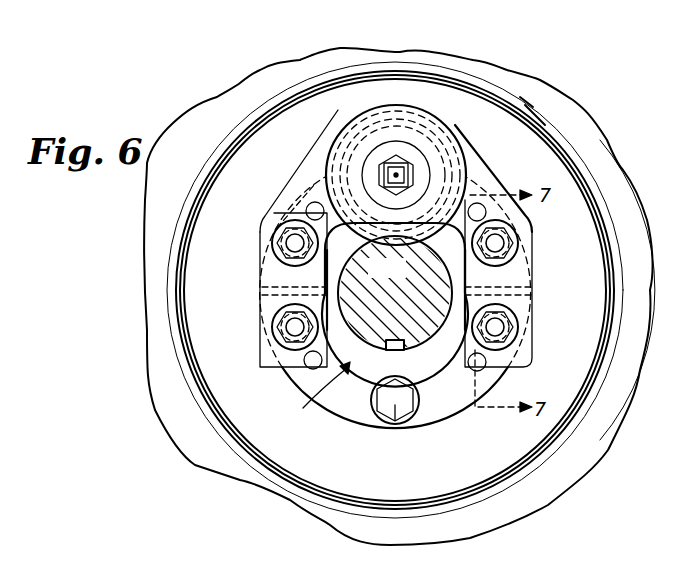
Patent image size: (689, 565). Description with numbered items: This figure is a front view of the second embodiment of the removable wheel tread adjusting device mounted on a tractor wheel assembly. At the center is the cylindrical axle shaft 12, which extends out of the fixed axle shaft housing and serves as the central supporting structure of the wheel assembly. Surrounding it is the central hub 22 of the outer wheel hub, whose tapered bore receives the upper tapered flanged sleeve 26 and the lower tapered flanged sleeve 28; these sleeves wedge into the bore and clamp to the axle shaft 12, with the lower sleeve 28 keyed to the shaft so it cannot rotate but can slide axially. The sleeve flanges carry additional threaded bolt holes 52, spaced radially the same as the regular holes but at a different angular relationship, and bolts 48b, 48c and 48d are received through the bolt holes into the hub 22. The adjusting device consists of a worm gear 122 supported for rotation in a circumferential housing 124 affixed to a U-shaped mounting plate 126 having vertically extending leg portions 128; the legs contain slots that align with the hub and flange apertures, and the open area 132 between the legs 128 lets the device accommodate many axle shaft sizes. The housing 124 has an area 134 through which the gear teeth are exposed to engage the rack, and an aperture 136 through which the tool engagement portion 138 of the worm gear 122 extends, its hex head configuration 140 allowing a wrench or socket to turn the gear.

The axle shaft 12 is at (416, 343).
The central hub 22 is at (592, 202).
The upper tapered flanged sleeve 26 is at (295, 208).
The lower tapered flanged sleeve 28 is at (438, 423).
The bolt 48b is at (290, 240).
The bolt 48c is at (290, 327).
The bolt 48d is at (394, 407).
The threaded bolt holes 52 is at (307, 215).
The worm gear 122 is at (440, 100).
The circumferential housing 124 is at (452, 128).
The mounting plate 126 is at (482, 177).
The leg portions 128 is at (258, 270).
The open area 132 is at (309, 394).
The area 134 is at (408, 242).
The aperture 136 is at (360, 152).
The tool engagement portion 138 is at (397, 157).
The hex head configuration 140 is at (380, 175).